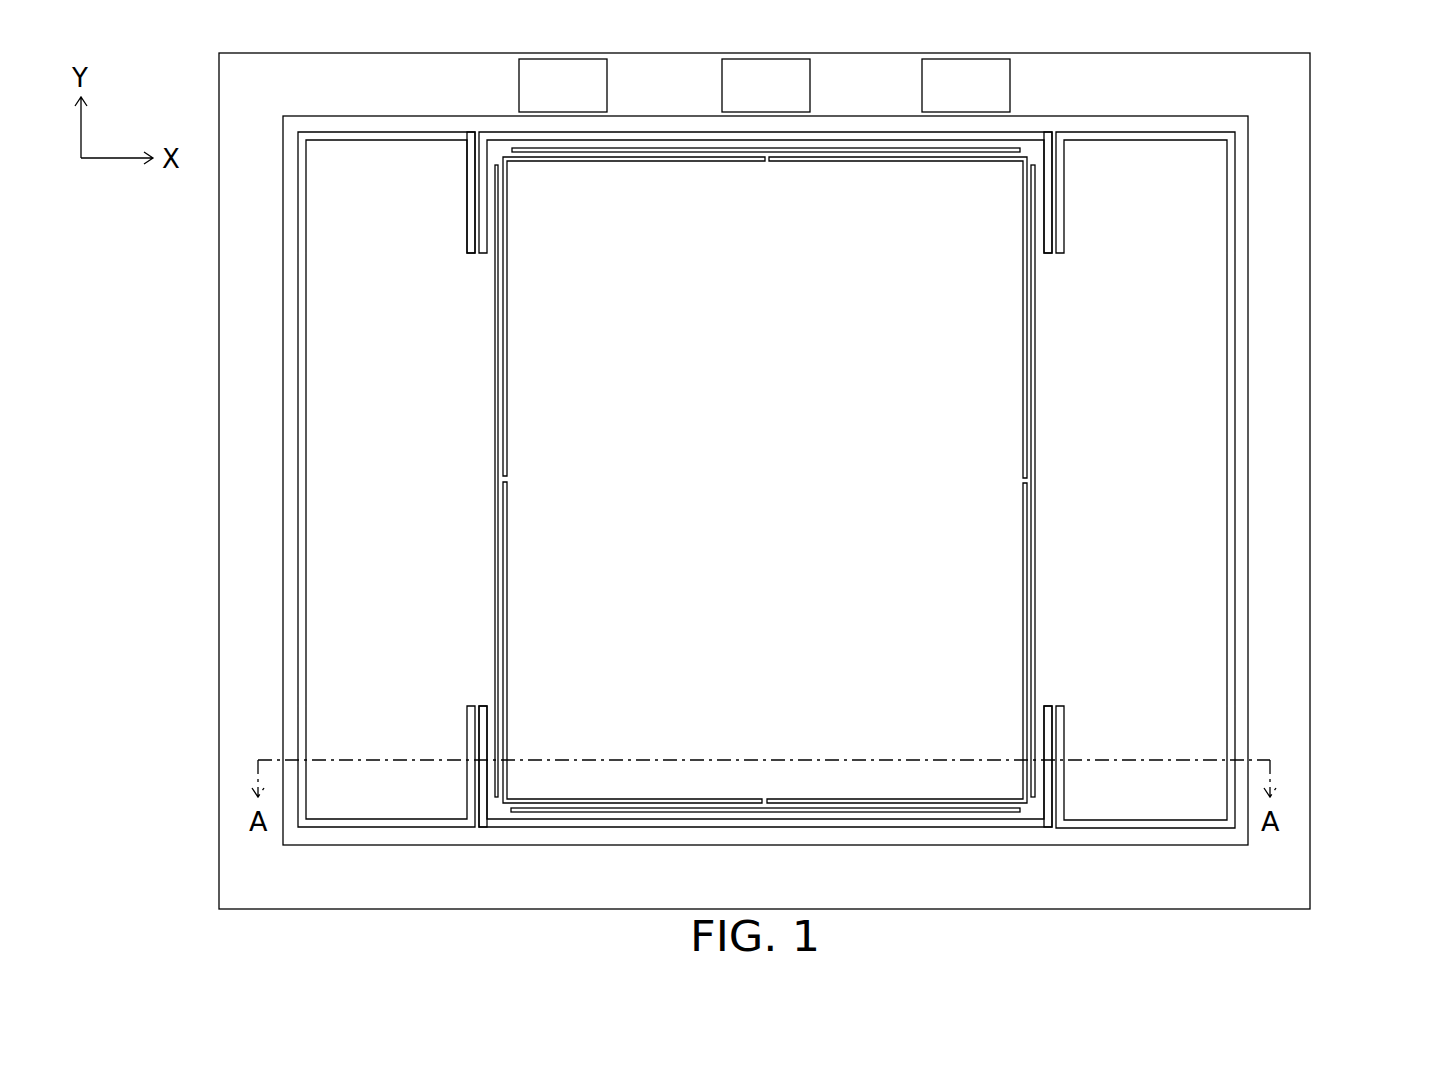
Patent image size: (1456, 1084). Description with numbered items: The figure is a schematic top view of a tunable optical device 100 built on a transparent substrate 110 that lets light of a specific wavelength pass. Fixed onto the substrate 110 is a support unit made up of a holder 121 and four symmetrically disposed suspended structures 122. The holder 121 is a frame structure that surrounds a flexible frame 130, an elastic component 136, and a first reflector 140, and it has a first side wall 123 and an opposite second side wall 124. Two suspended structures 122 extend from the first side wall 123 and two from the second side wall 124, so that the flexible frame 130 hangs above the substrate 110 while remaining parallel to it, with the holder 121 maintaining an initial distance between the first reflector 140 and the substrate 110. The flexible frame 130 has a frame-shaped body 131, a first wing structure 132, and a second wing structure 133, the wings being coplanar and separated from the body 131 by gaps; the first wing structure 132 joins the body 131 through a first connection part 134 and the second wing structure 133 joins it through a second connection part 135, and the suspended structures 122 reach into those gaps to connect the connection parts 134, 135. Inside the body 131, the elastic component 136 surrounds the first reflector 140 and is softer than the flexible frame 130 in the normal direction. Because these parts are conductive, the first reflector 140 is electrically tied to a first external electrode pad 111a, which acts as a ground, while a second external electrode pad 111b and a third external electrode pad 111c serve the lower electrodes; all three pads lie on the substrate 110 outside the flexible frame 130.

The tunable optical device 100 is at (162, 930).
The substrate 110 is at (250, 717).
The first external electrode pad 111a is at (590, 100).
The second external electrode pad 111b is at (795, 100).
The third external electrode pad 111c is at (995, 100).
The holder 121 is at (290, 542).
The suspended structures 122 is at (475, 236).
The first side wall 123 is at (641, 127).
The second side wall 124 is at (657, 833).
The flexible frame 130 is at (1399, 63).
The body 131 is at (908, 145).
The first wing structure 132 is at (330, 402).
The second wing structure 133 is at (1205, 388).
The first connection part 134 is at (478, 655).
The second connection part 135 is at (1055, 655).
The elastic component 136 is at (1031, 167).
The first reflector 140 is at (791, 505).